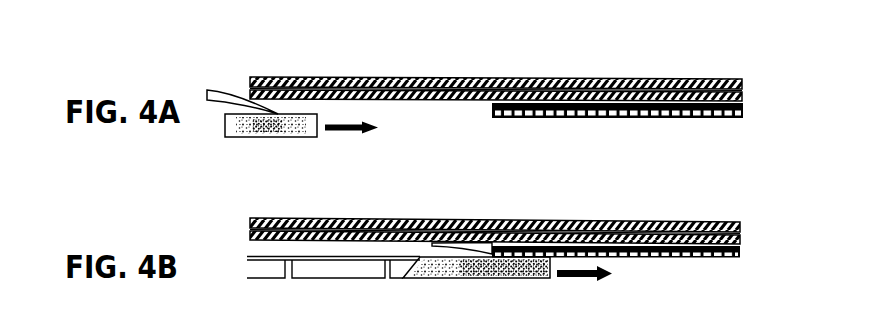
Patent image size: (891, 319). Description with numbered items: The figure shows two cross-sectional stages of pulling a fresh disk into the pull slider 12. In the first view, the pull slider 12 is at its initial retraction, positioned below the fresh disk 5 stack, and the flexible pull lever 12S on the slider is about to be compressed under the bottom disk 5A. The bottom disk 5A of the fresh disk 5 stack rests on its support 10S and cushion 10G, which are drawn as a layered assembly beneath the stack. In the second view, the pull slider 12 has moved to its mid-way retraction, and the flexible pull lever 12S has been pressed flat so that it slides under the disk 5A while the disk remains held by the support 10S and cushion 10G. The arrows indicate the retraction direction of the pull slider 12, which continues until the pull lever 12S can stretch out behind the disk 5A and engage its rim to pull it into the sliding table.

In FIG. 4A, the fresh disk stack 5 is at (713, 83).
In FIG. 4B, the fresh disk stack 5 is at (733, 223).
In FIG. 4A, the bottom disk 5A is at (743, 97).
In FIG. 4B, the bottom disk 5A is at (740, 237).
In FIG. 4A, the cushion 10G is at (743, 106).
In FIG. 4B, the cushion 10G is at (740, 247).
In FIG. 4A, the support 10S is at (743, 115).
In FIG. 4B, the support 10S is at (740, 255).
In FIG. 4A, the pull slider 12 is at (230, 132).
In FIG. 4B, the pull slider 12 is at (445, 280).
In FIG. 4A, the flexible pull lever 12S is at (207, 92).